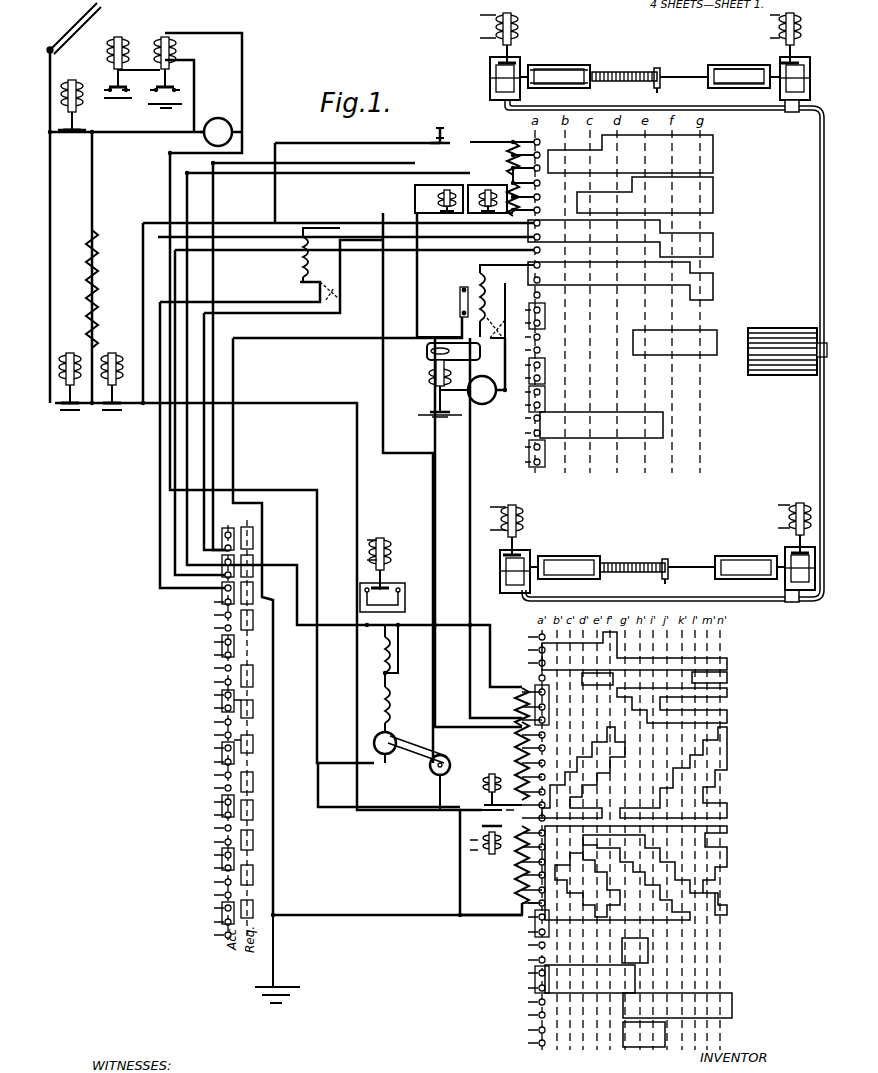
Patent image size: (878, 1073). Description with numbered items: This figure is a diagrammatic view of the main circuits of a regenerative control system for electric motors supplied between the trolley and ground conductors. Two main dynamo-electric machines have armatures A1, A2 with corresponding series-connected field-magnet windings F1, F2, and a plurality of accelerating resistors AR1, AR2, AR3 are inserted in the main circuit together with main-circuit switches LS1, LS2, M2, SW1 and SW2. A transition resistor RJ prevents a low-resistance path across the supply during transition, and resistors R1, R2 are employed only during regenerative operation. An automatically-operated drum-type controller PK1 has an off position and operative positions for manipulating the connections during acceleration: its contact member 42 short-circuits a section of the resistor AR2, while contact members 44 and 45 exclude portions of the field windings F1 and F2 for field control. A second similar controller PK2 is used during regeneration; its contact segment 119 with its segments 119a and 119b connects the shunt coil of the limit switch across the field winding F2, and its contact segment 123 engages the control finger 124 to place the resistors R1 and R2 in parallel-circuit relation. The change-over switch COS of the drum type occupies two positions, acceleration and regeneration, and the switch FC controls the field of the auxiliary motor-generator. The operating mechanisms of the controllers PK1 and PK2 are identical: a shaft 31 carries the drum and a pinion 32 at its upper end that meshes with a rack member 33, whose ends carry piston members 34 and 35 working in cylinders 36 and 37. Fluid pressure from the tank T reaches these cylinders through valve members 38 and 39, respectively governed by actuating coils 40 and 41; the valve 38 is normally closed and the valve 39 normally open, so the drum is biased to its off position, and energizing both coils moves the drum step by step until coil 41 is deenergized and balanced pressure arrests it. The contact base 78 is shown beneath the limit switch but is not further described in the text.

The actuating coil 40 is at (512, 27).
The actuating coil 41 is at (801, 27).
The valve member 38 is at (490, 80).
The valve member 39 is at (807, 80).
The piston member 34 is at (559, 65).
The cylinder 36 is at (559, 68).
The rack member 33 is at (624, 66).
The pinion 32 is at (658, 72).
The shaft 31 is at (660, 90).
The piston member 35 is at (739, 68).
The cylinder 37 is at (739, 65).
The contact member 42 is at (713, 158).
The contact member 44 is at (713, 255).
The contact member 45 is at (713, 284).
The contact segment 119 is at (727, 663).
The contact segment 119a is at (460, 292).
The contact segment 119b is at (460, 313).
The contact segment 123 is at (612, 760).
The control finger 124 is at (538, 820).
The contact base 78 is at (440, 425).
The automatically-operated controller PK1 is at (710, 248).
The second controller PK2 is at (722, 757).
The tank T is at (787, 339).
The armature A1 is at (221, 132).
The armature A2 is at (487, 371).
The main-circuit switch LS1 is at (66, 392).
The main-circuit switch LS2 is at (72, 116).
The main-circuit switch M2 is at (112, 392).
The accelerating resistor AR1 is at (106, 289).
The accelerating resistor AR2 is at (503, 162).
The accelerating resistor AR3 is at (534, 199).
The field-magnet winding F1 is at (300, 258).
The field-magnet winding F2 is at (478, 276).
The change-over switch COS is at (215, 712).
The switch FC is at (389, 553).
The transition resistor RJ is at (518, 712).
The resistor R1 is at (518, 748).
The resistor R2 is at (518, 893).
The main-circuit switch SW1 is at (496, 785).
The main-circuit switch SW2 is at (488, 854).